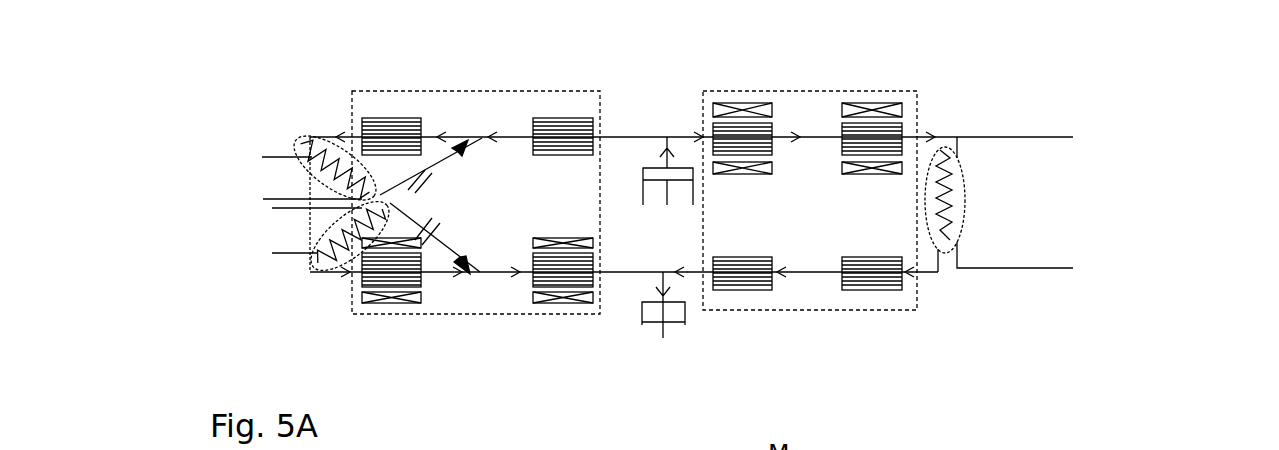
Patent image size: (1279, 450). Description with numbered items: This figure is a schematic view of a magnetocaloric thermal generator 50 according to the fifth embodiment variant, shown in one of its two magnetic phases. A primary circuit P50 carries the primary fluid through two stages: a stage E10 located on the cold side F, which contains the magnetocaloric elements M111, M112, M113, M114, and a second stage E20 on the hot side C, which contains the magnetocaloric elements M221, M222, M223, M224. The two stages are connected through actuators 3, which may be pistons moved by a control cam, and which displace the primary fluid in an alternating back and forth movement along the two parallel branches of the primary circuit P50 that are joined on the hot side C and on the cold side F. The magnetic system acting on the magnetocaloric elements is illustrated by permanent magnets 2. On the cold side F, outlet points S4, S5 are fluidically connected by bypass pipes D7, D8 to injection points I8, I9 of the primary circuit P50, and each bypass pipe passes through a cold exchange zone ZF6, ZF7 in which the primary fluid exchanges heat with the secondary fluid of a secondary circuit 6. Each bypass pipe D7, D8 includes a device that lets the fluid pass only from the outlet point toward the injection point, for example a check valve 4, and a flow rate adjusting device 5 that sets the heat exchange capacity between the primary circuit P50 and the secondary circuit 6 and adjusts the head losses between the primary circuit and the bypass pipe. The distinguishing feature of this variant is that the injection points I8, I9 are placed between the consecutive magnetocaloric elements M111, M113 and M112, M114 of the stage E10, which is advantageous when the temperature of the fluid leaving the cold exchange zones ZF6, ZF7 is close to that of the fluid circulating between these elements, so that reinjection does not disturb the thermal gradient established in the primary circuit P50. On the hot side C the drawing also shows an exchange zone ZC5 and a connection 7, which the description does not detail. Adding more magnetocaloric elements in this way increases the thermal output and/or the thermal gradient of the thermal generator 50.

The magnetocaloric thermal generator 50 is at (1160, 128).
The cold side F is at (319, 158).
The separator S4 is at (322, 148).
The separator S5 is at (318, 263).
The secondary circuit 6 is at (318, 153).
The cold exchange zone ZF6 is at (318, 190).
The cold exchange zone ZF7 is at (318, 215).
The magnetocaloric element M111 is at (398, 132).
The magnetocaloric element M112 is at (375, 262).
The magnetocaloric element M113 is at (556, 138).
The magnetocaloric element M114 is at (548, 265).
The magnetocaloric element M221 is at (733, 135).
The magnetocaloric element M222 is at (740, 268).
The magnetocaloric element M223 is at (860, 135).
The magnetocaloric element M224 is at (878, 268).
The bypass pipe D7 is at (476, 138).
The bypass pipe D8 is at (447, 235).
The injection point I8 is at (476, 138).
The injection point I9 is at (482, 272).
The primary circuit P50 is at (640, 137).
The permanent magnets 2 is at (570, 300).
The actuators 3 is at (660, 182).
The check valve 4 is at (465, 153).
The flow rate adjusting device 5 is at (436, 232).
The hot side C is at (988, 156).
The outlet line 7 is at (1066, 137).
The stage E10 is at (490, 316).
The unit stage 20 E20 is at (705, 312).
The concentrate circulation ZC5 is at (968, 200).